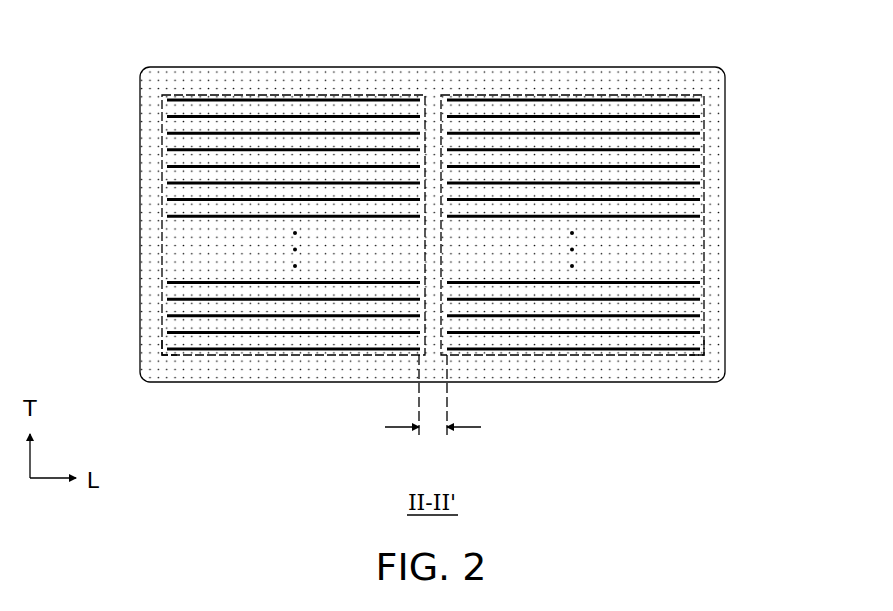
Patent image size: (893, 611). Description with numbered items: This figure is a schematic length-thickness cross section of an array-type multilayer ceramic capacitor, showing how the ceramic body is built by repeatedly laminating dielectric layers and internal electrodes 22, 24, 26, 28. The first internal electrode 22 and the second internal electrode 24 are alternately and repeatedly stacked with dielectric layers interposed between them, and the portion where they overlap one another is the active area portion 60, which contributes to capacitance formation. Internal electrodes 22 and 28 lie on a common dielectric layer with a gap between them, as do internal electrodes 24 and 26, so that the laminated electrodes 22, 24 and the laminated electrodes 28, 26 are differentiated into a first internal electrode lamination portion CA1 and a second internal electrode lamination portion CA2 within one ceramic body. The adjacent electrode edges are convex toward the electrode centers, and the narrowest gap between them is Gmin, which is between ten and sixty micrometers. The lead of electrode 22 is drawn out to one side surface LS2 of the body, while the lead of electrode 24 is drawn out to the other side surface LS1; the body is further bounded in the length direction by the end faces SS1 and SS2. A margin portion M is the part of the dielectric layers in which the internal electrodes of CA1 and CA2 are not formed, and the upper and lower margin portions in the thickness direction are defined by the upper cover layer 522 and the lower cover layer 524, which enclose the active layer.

The first internal electrode 22 is at (203, 97).
The second internal electrode 24 is at (207, 115).
The internal electrode 26 is at (675, 113).
The internal electrode 28 is at (673, 93).
The active area portion 60 is at (223, 356).
The upper cover layer 522 is at (511, 80).
The lower cover layer 524 is at (517, 373).
The side surface LS1 is at (352, 383).
The side surface LS2 is at (348, 67).
The first short side SS1 is at (140, 224).
The second short side SS2 is at (725, 224).
The first internal electrode lamination portion CA1 is at (158, 323).
The second internal electrode lamination portion CA2 is at (675, 367).
The margin portion M is at (273, 369).
The narrowest gap Gmin is at (433, 409).